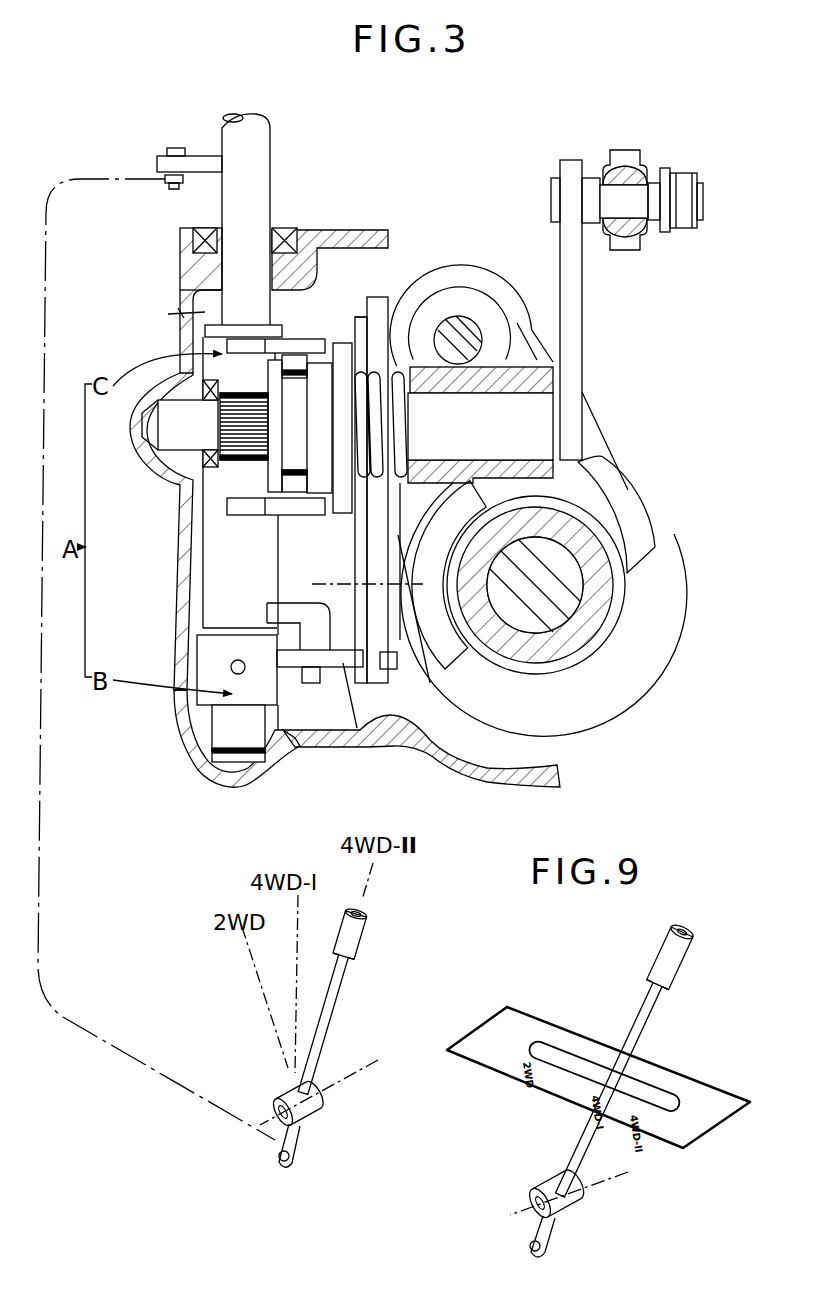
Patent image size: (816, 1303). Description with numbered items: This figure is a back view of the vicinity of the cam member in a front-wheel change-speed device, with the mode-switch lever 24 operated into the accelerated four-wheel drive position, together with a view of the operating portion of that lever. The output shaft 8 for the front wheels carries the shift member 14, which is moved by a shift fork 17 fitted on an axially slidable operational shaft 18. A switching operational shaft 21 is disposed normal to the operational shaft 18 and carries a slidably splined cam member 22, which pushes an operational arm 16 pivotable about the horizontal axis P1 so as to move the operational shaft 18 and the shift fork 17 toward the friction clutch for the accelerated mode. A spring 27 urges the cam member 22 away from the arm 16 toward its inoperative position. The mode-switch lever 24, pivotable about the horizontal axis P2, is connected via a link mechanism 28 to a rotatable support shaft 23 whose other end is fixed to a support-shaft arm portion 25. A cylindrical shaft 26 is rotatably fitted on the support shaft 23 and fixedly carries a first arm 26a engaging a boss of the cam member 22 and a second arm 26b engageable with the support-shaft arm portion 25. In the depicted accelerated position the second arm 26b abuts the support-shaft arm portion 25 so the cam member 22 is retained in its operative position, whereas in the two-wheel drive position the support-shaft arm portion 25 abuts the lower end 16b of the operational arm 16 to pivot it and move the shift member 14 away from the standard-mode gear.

In FIG. 3, the output shaft 8 is at (553, 620).
In FIG. 3, the shift member 14 is at (648, 663).
In FIG. 3, the operational arm 16 is at (385, 300).
In FIG. 3, the lower end of the operational arm 16b is at (392, 681).
In FIG. 3, the shift fork 17 is at (647, 543).
In FIG. 3, the operational shaft 18 is at (470, 322).
In FIG. 3, the switching operational shaft 21 is at (582, 393).
In FIG. 3, the cam member 22 is at (367, 297).
In FIG. 3, the support shaft 23 is at (270, 137).
In FIG. 3, the mode-switch lever 24 is at (337, 990).
In FIG. 9, the mode-switch lever 24 is at (680, 973).
In FIG. 3, the support-shaft arm portion 25 is at (360, 748).
In FIG. 3, the cylindrical shaft 26 is at (207, 580).
In FIG. 3, the first arm 26a is at (310, 339).
In FIG. 3, the second arm 26b is at (313, 683).
In FIG. 3, the spring 27 is at (392, 428).
In FIG. 3, the link mechanism 28 is at (54, 864).
In FIG. 3, the horizontal axis P1 is at (328, 583).
In FIG. 3, the horizontal axis P2 is at (332, 1088).
In FIG. 9, the horizontal axis P2 is at (582, 1186).